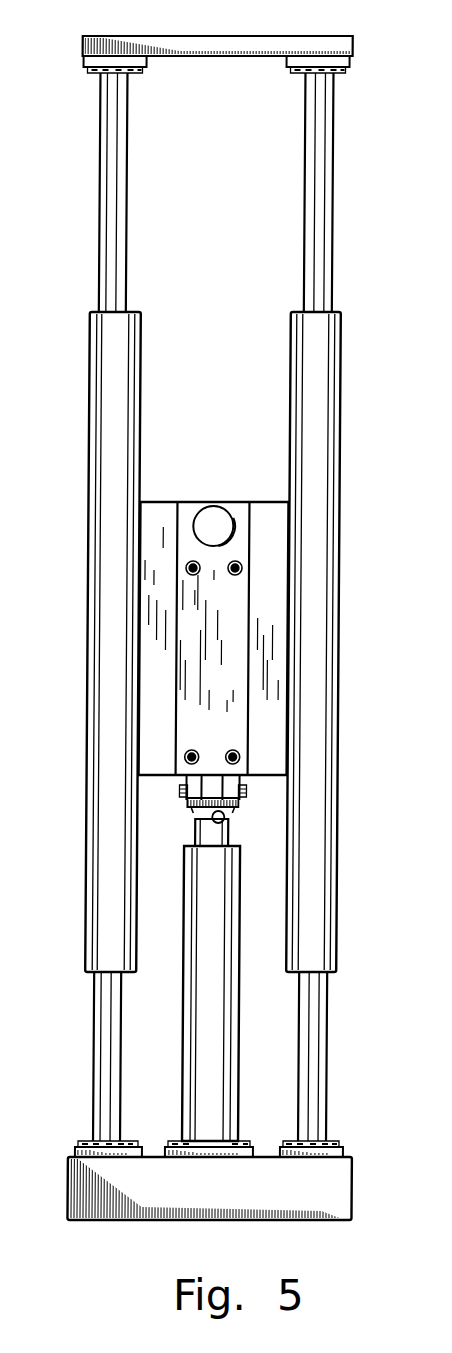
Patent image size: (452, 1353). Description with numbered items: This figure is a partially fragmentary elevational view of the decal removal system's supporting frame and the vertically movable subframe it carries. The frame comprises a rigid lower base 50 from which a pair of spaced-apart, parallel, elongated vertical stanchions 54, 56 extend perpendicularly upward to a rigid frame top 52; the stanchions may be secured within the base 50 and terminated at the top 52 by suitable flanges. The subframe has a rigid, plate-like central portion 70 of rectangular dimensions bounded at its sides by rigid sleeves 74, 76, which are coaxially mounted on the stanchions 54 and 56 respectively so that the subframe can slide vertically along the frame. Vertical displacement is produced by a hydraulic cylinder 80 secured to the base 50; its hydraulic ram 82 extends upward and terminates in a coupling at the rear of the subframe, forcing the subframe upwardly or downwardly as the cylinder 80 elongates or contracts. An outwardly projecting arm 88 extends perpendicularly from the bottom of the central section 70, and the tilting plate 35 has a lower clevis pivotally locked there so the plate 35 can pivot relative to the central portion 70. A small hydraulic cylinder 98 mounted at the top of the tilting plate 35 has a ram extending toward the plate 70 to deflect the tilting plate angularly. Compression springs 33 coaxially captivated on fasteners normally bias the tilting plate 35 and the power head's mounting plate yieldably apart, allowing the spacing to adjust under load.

The lower base 50 is at (352, 1193).
The frame top 52 is at (189, 37).
The stanchion 54 is at (100, 139).
The stanchion 56 is at (335, 157).
The sleeve 74 is at (91, 353).
The sleeve 76 is at (341, 372).
The central portion 70 is at (151, 500).
The tilting plate 35 is at (188, 510).
The small hydraulic cylinder 98 is at (238, 518).
The compression springs 33 is at (186, 564).
The arm 88 is at (196, 808).
The hydraulic ram 82 is at (233, 840).
The hydraulic cylinder 80 is at (241, 1036).